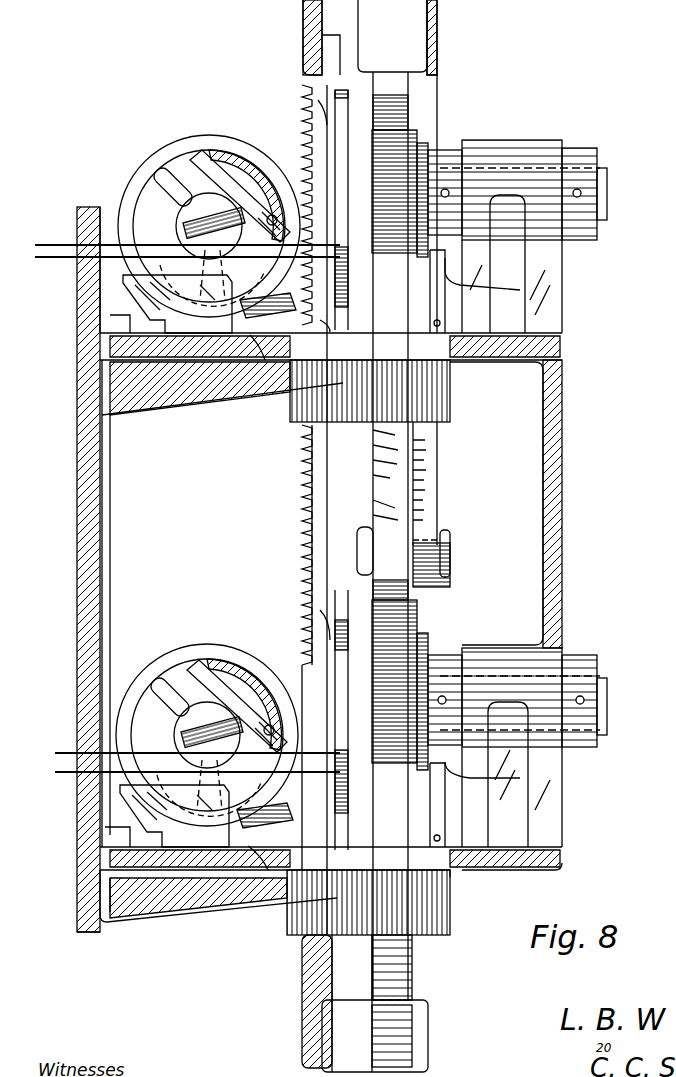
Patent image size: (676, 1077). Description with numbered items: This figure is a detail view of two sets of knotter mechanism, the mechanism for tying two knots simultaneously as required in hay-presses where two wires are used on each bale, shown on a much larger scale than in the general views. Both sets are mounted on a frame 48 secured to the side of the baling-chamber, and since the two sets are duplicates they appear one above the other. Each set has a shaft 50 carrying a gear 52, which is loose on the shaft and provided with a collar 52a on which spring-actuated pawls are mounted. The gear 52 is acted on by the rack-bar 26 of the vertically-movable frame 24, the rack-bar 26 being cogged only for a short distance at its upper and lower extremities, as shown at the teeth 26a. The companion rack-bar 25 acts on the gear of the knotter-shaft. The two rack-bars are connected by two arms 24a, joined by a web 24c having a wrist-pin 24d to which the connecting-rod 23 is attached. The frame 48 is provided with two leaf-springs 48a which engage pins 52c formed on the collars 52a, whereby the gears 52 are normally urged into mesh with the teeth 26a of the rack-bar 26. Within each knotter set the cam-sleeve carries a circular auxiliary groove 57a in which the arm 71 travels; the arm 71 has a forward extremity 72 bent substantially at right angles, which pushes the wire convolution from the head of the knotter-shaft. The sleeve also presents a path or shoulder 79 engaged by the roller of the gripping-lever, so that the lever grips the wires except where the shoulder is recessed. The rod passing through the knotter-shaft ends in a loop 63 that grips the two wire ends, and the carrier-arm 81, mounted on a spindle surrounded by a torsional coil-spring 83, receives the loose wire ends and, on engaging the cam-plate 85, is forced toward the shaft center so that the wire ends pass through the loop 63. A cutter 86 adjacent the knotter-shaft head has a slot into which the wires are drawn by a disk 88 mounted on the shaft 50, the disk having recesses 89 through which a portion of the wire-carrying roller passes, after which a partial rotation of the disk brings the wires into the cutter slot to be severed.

The connecting-rod 23 is at (432, 470).
The vertically-movable frame 24 is at (345, 1003).
The arms 24a is at (370, 166).
The web 24c is at (372, 967).
The wrist-pin 24d is at (452, 552).
The rack-bar 25 is at (313, 477).
The rack-bar 26 is at (375, 483).
The teeth 26a is at (395, 108).
The frame 48 is at (334, 569).
The leaf-springs 48a is at (437, 330).
The shaft 50 is at (607, 196).
The gear 52 is at (410, 132).
The collar 52a is at (432, 142).
The pin 52c is at (520, 290).
The circular auxiliary groove 57a is at (208, 150).
The loop 63 is at (218, 205).
The arm 71 is at (160, 180).
The forward extremity 72 is at (180, 165).
The path or shoulder 79 is at (122, 180).
The carrier-arm 81 is at (266, 567).
The coil-spring 83 is at (270, 205).
The cam-plate 85 is at (178, 280).
The cutter 86 is at (267, 340).
The disk 88 is at (320, 112).
The recesses 89 is at (345, 200).